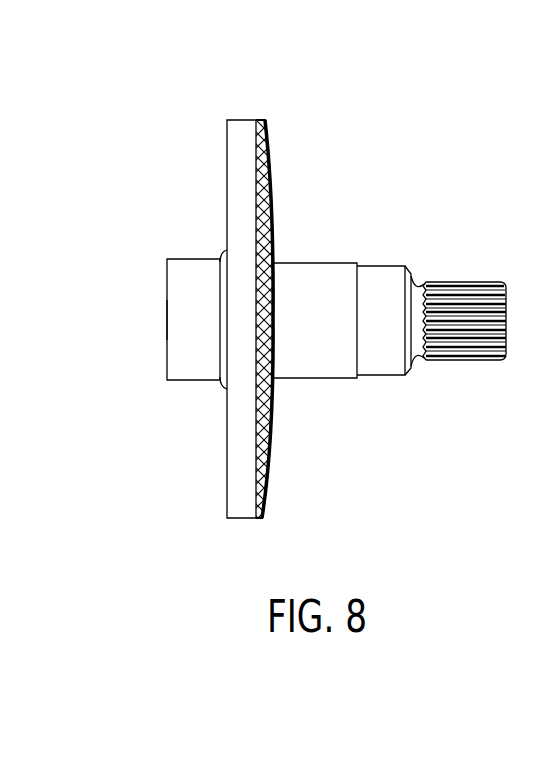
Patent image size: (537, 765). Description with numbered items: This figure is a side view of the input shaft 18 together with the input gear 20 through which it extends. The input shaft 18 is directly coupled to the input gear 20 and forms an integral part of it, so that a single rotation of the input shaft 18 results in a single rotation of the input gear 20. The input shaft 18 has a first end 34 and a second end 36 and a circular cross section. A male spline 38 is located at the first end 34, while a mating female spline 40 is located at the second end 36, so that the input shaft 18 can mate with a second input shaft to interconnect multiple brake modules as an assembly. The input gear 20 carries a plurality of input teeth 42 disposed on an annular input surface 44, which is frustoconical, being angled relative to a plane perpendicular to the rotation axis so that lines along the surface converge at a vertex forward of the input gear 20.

The input gear 20 is at (329, 306).
The input shaft 18 is at (330, 278).
The first end 34 is at (463, 306).
The second end 36 is at (188, 247).
The male spline 38 is at (462, 348).
The female spline 40 is at (167, 355).
The input teeth 42 is at (266, 437).
The annular input surface 44 is at (258, 520).